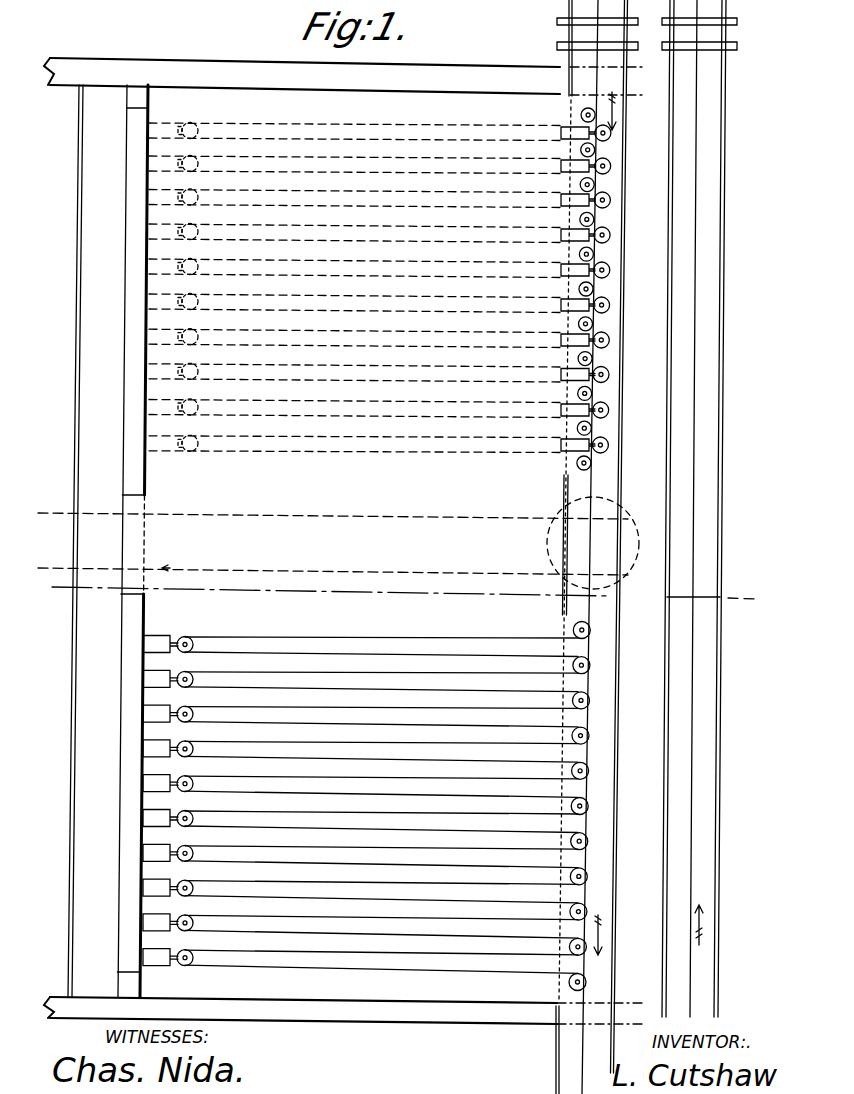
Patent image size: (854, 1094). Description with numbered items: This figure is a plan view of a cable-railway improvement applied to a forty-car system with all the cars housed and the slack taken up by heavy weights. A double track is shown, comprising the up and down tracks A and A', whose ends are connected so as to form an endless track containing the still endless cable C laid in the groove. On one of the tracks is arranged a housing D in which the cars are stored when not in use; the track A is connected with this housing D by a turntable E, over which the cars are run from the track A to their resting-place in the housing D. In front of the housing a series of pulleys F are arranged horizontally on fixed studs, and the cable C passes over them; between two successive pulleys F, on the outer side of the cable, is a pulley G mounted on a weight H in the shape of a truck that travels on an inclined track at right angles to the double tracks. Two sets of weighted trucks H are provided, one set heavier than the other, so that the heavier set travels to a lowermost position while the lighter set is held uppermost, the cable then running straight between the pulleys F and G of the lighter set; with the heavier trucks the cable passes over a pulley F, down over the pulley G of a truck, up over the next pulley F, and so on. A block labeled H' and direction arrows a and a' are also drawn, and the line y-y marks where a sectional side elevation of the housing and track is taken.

The track A is at (619, 728).
The track A' is at (716, 508).
The endless cable C is at (697, 572).
The housing D is at (340, 541).
The turntable E is at (553, 547).
The pulleys F is at (580, 110).
The pulley G is at (612, 298).
The weight H is at (560, 201).
The hinged arm block H' is at (558, 376).
The direction of travel arrow a is at (591, 945).
The direction of travel arrow a' is at (676, 520).
The section line y- y is at (403, 600).